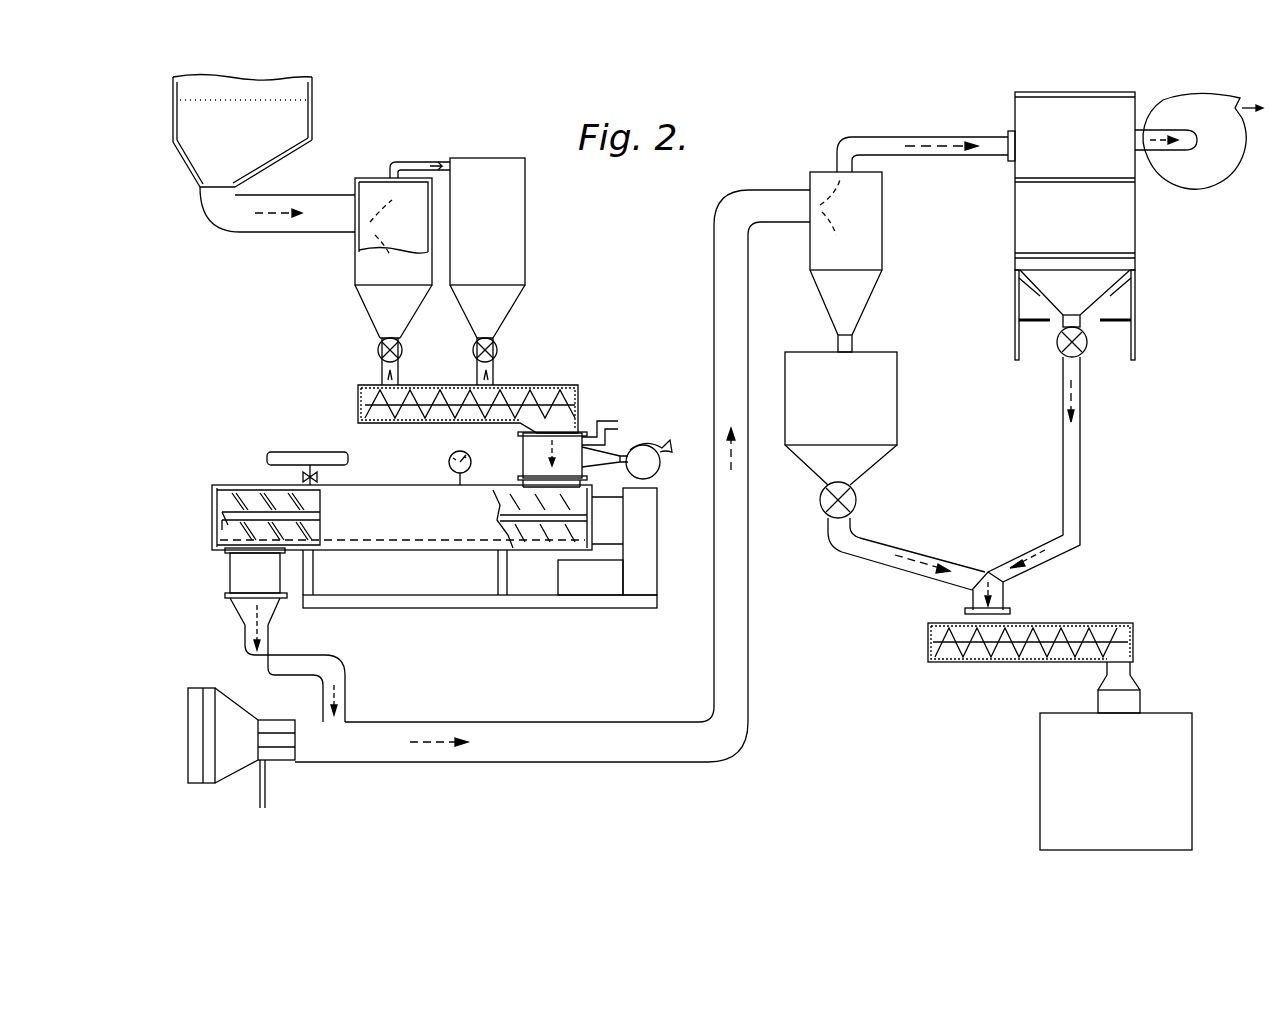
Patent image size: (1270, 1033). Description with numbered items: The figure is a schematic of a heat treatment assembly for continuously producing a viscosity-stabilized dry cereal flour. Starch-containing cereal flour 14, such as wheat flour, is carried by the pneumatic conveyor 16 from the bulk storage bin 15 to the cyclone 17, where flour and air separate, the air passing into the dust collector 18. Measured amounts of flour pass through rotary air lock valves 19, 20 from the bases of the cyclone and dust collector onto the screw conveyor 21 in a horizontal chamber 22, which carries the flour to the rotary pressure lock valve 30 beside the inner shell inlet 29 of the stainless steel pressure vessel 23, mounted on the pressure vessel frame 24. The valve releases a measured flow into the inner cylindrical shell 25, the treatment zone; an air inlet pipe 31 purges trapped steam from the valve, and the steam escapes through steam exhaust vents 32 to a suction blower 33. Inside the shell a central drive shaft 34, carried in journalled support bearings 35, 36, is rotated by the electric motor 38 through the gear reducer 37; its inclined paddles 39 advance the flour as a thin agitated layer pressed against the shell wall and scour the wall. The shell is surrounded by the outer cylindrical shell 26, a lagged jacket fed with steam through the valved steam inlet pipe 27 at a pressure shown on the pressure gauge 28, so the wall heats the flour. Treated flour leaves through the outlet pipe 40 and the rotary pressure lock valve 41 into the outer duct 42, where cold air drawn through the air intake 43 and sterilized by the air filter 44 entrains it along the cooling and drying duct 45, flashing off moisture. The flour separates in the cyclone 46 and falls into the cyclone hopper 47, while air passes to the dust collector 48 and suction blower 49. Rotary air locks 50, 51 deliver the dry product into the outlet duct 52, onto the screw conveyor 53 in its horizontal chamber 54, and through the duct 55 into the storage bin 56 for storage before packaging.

The cereal flour 14 is at (290, 130).
The bulk storage bin 15 is at (198, 165).
The pneumatic conveyor 16 is at (238, 218).
The cyclone 17 is at (368, 268).
The dust collector 18 is at (505, 250).
The rotary air lock valve 19 is at (380, 344).
The rotary air lock valve 20 is at (497, 345).
The screw conveyor 21 is at (362, 412).
The horizontal chamber 22 is at (524, 386).
The stainless steel pressure vessel 23 is at (462, 568).
The pressure vessel frame 24 is at (500, 580).
The inner cylindrical shell 25 is at (596, 546).
The outer cylindrical shell 26 is at (212, 490).
The valved steam inlet pipe 27 is at (307, 452).
The pressure gauge 28 is at (448, 462).
The inner shell inlet 29 is at (527, 486).
The rotary pressure lock valve 30 is at (568, 440).
The air inlet pipe 31 is at (614, 425).
The steam exhaust vents 32 is at (597, 469).
The suction blower 33 is at (655, 445).
The central drive shaft 34 is at (240, 490).
The journalled support bearing 35 is at (212, 512).
The journalled support bearing 36 is at (598, 517).
The gear reducer 37 is at (612, 523).
The electric motor 38 is at (600, 585).
The inclined paddles 39 is at (322, 532).
The outlet pipe 40 is at (225, 550).
The rotary pressure lock valve 41 is at (240, 578).
The outer duct 42 is at (262, 658).
The air intake 43 is at (185, 722).
The air filter 44 is at (195, 787).
The cooling and drying duct 45 is at (380, 760).
The cyclone 46 is at (855, 298).
The cyclone hopper 47 is at (872, 362).
The dust collector 48 is at (1030, 125).
The suction blower 49 is at (1225, 130).
The rotary air lock 50 is at (856, 500).
The rotary air lock 51 is at (1078, 352).
The outlet duct 52 is at (1003, 595).
The screw conveyor 53 is at (928, 632).
The horizontal chamber 54 is at (977, 660).
The duct 55 is at (1142, 695).
The storage bin 56 is at (1178, 772).